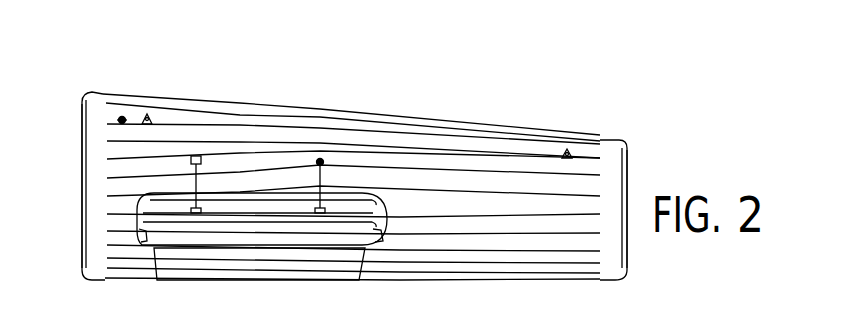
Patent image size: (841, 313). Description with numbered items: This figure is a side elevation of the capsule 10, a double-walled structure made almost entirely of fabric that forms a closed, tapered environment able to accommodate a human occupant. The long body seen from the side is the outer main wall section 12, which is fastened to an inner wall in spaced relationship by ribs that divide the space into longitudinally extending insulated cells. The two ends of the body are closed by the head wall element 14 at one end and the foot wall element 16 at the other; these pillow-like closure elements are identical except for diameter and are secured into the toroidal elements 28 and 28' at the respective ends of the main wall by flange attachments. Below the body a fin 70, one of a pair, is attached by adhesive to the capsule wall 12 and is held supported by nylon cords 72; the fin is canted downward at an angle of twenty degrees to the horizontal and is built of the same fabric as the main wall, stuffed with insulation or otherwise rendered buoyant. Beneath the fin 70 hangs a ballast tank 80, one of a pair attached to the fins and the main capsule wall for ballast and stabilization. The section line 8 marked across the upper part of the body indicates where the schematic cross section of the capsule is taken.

The section line 8— 8 is at (133, 72).
The capsule 10 is at (462, 116).
The outer main wall section 12 is at (545, 258).
The head wall element 14 is at (88, 200).
The foot wall element 16 is at (612, 237).
The toroidal element 28 is at (65, 165).
The toroidal element 28' is at (646, 192).
The fin 70 is at (246, 228).
The nylon cord 72 is at (322, 183).
The ballast tank 80 is at (318, 272).